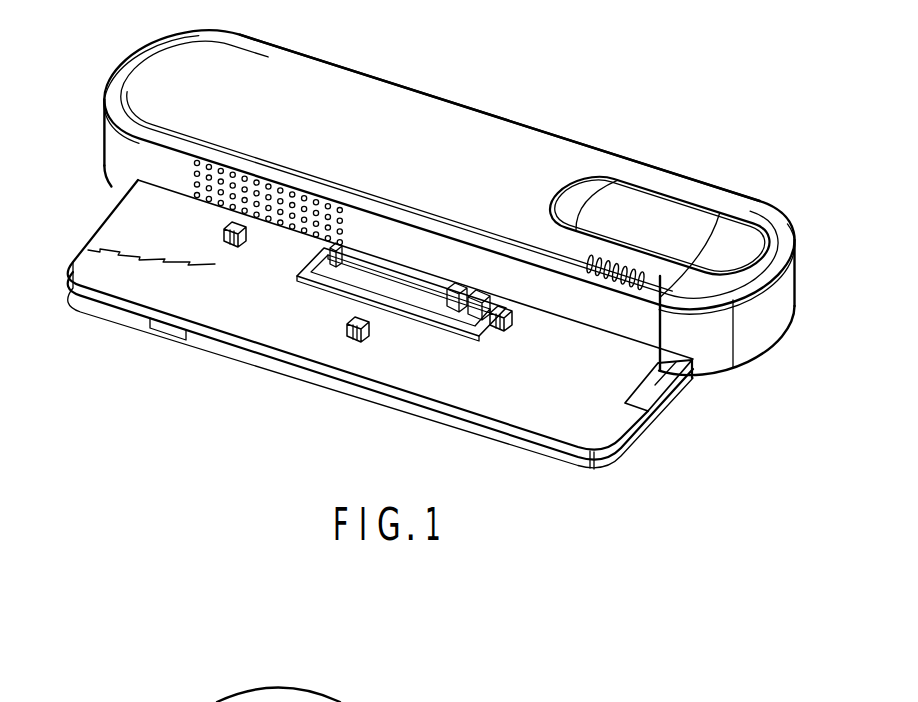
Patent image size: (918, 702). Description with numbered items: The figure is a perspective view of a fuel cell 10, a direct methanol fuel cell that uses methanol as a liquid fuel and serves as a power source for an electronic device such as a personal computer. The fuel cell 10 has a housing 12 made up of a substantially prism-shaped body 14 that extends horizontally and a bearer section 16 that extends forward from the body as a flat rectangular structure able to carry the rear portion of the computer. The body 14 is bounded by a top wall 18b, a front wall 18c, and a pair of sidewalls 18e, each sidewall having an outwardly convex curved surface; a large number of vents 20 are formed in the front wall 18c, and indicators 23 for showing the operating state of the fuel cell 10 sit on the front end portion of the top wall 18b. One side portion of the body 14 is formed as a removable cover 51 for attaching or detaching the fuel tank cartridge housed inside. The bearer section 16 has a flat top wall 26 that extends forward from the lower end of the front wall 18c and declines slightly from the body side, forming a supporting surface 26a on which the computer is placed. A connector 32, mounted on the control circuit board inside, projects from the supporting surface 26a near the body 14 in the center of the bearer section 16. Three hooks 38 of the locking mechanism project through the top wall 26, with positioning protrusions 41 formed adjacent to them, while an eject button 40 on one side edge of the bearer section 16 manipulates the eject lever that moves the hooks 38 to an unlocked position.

The fuel cell 10 is at (510, 78).
The housing 12 is at (318, 57).
The body 14 is at (390, 112).
The bearer section 16 is at (246, 366).
The top wall 18b is at (537, 142).
The front wall 18c is at (576, 322).
The sidewall 18e is at (106, 146).
The vents 20 is at (235, 172).
The indicators 23 is at (606, 302).
The top wall 26 is at (626, 436).
The supporting surface 26a is at (393, 382).
The connector 32 is at (393, 273).
The hooks 38 is at (229, 249).
The eject button 40 is at (653, 388).
The positioning protrusions 41 is at (237, 240).
The cover 51 is at (751, 213).